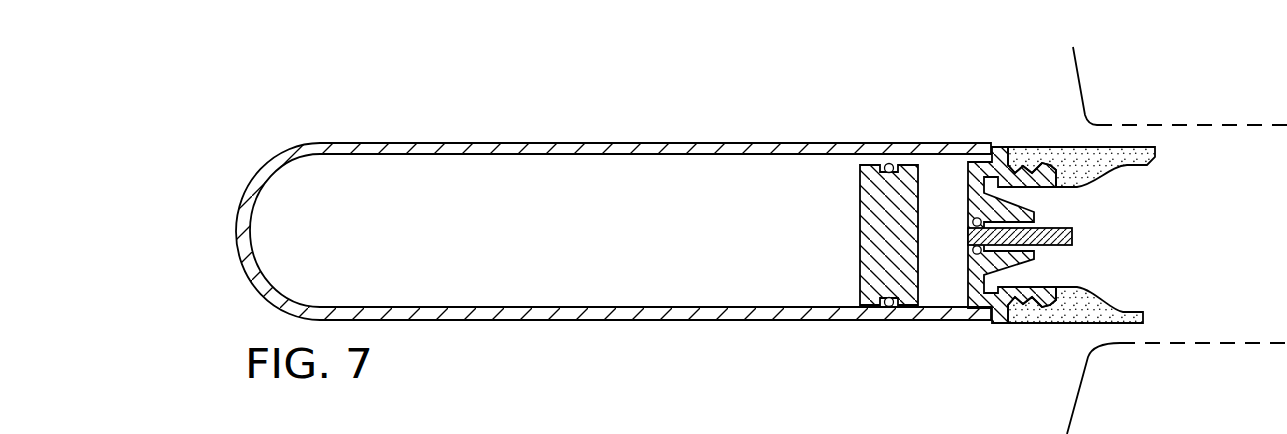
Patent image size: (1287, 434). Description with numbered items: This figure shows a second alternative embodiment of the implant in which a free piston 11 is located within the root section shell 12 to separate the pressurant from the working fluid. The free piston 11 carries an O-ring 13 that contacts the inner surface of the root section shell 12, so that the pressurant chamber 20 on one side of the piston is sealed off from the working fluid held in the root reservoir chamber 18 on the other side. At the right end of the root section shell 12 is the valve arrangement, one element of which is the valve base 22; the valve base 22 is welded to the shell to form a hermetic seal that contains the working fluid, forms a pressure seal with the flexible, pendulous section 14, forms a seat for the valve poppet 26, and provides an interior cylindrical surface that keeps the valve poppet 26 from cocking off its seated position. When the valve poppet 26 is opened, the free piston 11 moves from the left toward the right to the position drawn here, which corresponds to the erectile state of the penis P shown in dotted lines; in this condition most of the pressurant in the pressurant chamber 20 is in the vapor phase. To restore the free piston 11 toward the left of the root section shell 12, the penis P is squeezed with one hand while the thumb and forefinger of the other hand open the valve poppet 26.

The root section shell 12 is at (530, 144).
The pressurant chamber 20 is at (381, 245).
The free piston 11 is at (860, 218).
The O-ring 13 is at (891, 308).
The flexible, pendulous section 14 is at (1124, 323).
The valve poppet 26 is at (970, 223).
The valve base 22 is at (968, 273).
The root reservoir chamber 18 is at (955, 248).
The patient body P is at (1245, 126).